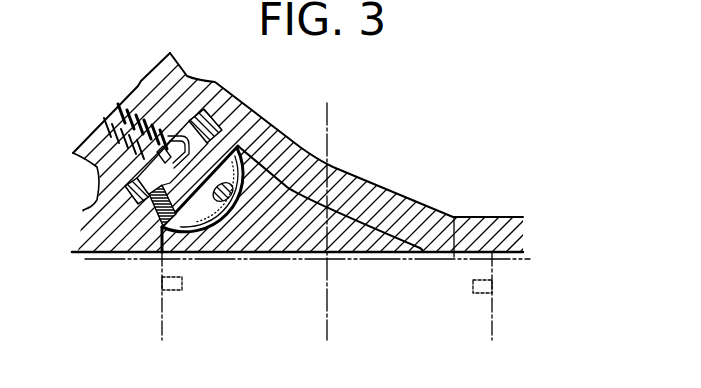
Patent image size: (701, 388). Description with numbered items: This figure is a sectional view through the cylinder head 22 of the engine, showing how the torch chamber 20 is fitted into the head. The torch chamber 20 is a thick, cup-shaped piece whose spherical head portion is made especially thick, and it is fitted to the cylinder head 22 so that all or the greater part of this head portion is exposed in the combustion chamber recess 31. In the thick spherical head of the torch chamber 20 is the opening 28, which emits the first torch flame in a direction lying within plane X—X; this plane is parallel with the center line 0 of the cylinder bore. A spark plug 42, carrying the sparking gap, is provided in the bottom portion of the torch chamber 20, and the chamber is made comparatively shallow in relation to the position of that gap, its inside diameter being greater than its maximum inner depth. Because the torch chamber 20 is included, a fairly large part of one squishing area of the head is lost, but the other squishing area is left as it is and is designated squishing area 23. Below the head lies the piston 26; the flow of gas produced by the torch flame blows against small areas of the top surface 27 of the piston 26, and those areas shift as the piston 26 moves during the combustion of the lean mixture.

The torch chamber 20 is at (232, 168).
The cylinder head 22 is at (380, 200).
The squishing area 23 is at (455, 217).
The piston 26 is at (453, 312).
The top surface 27 is at (343, 257).
The opening 28 is at (227, 203).
The combustion chamber recess 31 is at (315, 213).
The spark plug 42 is at (113, 118).
The center line 0 is at (326, 320).